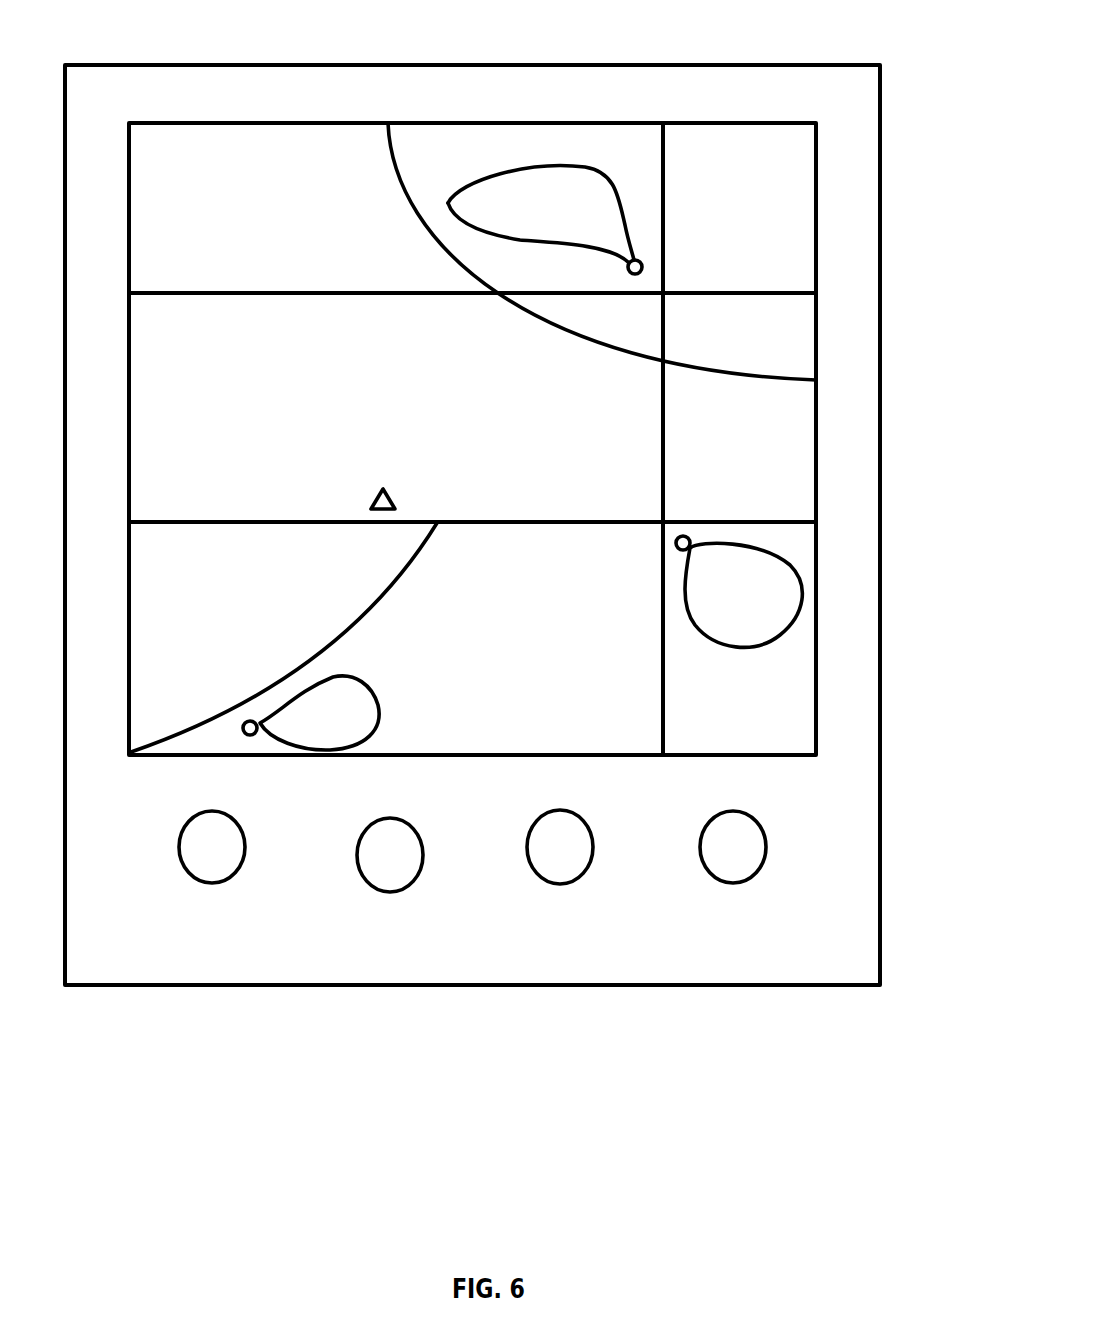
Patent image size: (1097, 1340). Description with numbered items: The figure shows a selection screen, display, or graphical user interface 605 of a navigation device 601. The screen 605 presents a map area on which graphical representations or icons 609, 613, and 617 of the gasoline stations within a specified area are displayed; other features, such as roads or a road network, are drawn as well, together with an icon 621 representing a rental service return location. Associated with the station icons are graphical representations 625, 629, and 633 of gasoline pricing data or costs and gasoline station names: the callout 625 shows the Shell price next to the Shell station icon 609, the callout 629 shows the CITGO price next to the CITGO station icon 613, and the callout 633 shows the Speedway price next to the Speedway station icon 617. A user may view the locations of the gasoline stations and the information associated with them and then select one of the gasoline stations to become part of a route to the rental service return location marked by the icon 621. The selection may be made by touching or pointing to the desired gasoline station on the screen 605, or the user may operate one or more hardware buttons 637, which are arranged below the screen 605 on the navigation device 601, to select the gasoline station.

The navigation device 601 is at (713, 63).
The selection screen 605 is at (733, 202).
The graphical representation of gasoline station 609 is at (257, 718).
The graphical representation of gasoline station 613 is at (690, 530).
The graphical representation of gasoline station 617 is at (634, 276).
The icon representing rental service return location 621 is at (377, 498).
The graphical representation of gasoline pricing data 625 is at (368, 680).
The graphical representation of gasoline pricing data 629 is at (768, 647).
The graphical representation of gasoline pricing data 633 is at (503, 172).
The hardware buttons 637 is at (735, 887).